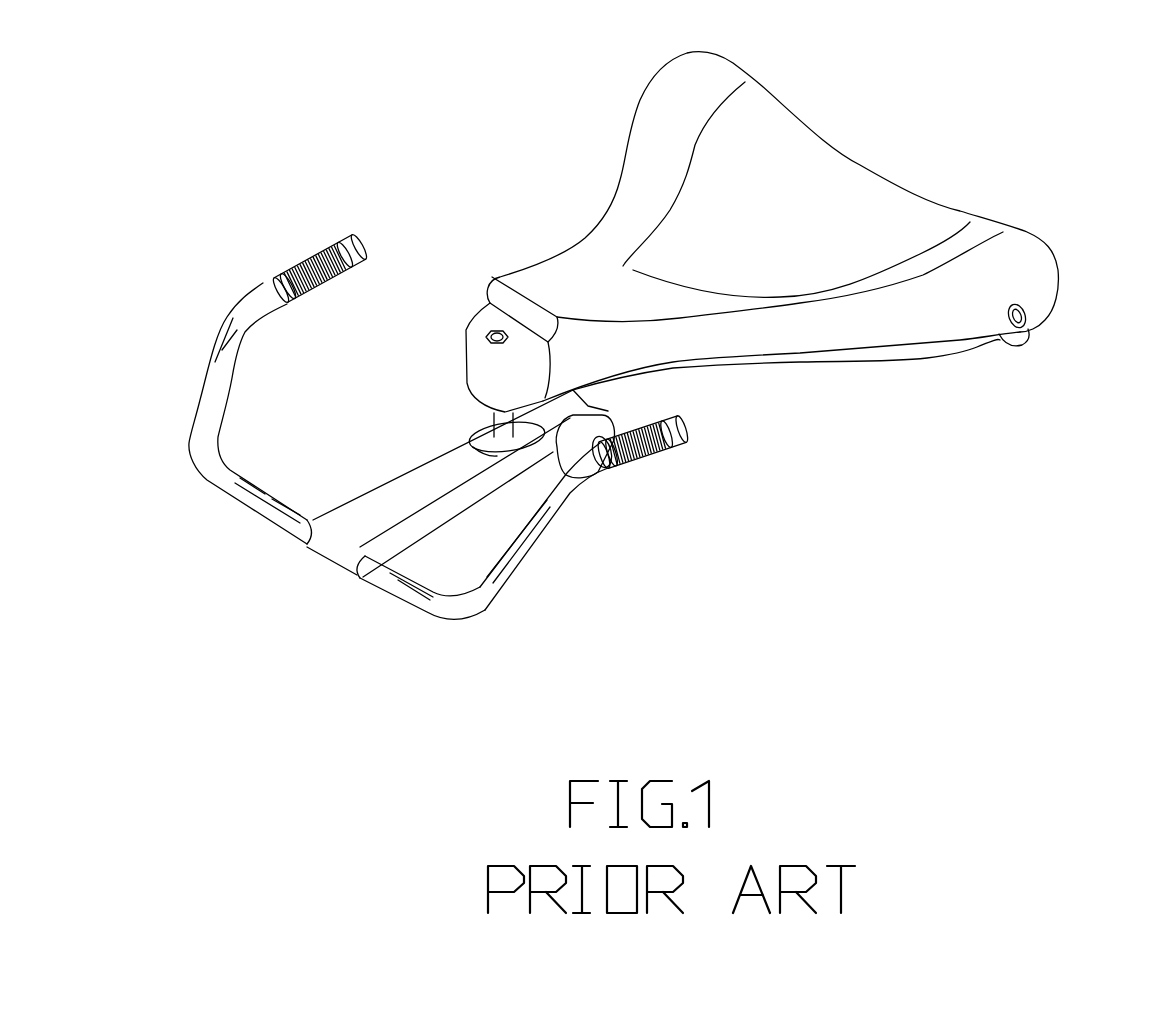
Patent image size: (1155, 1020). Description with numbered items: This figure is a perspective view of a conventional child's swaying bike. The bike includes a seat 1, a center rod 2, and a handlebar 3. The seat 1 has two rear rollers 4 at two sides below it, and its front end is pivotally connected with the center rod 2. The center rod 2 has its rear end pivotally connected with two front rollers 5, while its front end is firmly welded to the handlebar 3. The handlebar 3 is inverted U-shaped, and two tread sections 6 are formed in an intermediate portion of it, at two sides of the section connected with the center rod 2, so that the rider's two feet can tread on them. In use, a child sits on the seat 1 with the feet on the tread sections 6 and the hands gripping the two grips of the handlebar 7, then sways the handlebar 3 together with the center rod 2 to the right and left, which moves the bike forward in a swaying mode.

The seat 1 is at (1058, 270).
The center rod 2 is at (327, 567).
The handlebar 3 is at (533, 567).
The rear rollers 4 is at (1017, 350).
The front rollers 5 is at (600, 417).
The tread sections 6 is at (393, 600).
The grips of the handlebar 7 is at (647, 470).